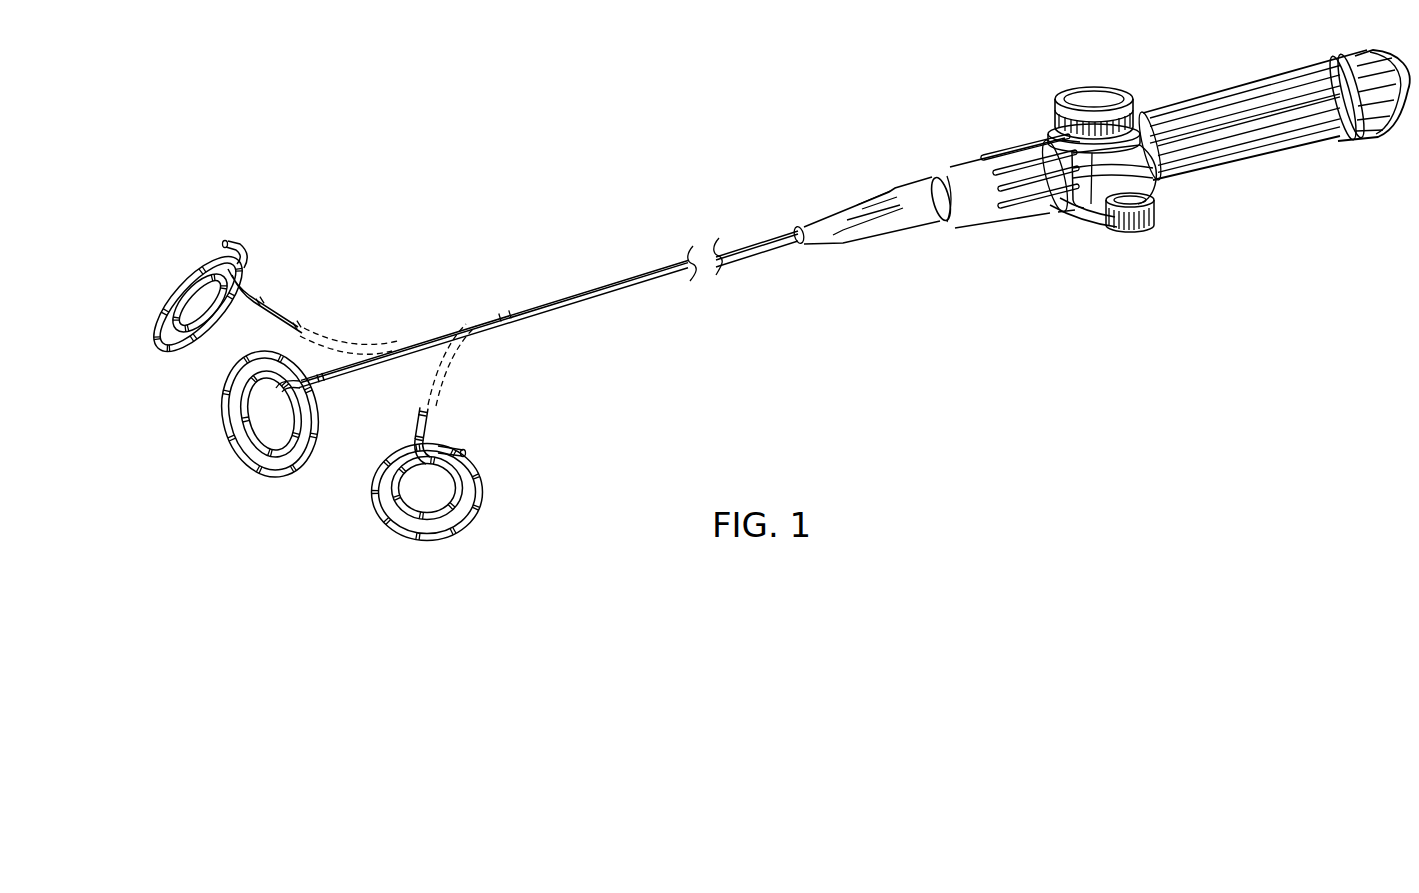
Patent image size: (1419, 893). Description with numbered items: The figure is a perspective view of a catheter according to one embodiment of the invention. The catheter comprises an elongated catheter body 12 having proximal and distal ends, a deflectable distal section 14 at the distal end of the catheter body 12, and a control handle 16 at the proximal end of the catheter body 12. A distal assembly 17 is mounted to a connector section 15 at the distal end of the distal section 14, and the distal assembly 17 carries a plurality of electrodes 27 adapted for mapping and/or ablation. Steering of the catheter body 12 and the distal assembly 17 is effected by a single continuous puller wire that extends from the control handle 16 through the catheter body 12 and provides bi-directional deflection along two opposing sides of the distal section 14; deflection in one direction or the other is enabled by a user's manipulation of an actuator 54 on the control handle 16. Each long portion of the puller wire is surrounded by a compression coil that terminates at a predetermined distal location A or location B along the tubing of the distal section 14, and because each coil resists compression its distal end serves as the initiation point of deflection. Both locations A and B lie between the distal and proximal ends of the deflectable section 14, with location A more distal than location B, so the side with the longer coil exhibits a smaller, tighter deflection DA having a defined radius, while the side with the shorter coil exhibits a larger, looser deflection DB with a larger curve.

The catheter body 12 is at (754, 242).
The deflectable distal section 14 is at (445, 326).
The connector section 15 is at (315, 381).
The control handle 16 is at (1224, 168).
The distal assembly 17 is at (246, 430).
The electrodes 27 is at (260, 473).
The actuator 54 is at (1097, 230).
The distal location A is at (409, 336).
The distal location B is at (487, 318).
The deflection DA is at (367, 302).
The deflection DB is at (518, 338).